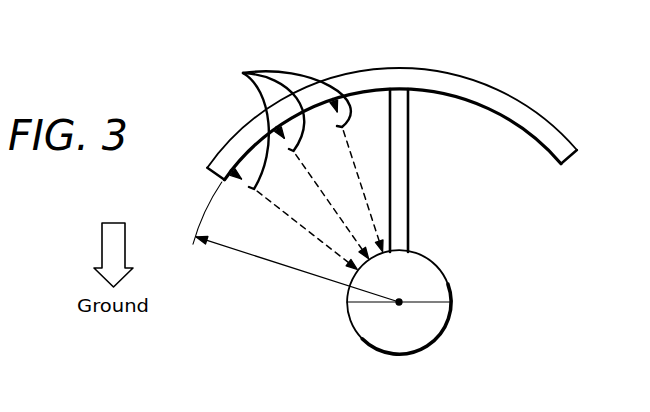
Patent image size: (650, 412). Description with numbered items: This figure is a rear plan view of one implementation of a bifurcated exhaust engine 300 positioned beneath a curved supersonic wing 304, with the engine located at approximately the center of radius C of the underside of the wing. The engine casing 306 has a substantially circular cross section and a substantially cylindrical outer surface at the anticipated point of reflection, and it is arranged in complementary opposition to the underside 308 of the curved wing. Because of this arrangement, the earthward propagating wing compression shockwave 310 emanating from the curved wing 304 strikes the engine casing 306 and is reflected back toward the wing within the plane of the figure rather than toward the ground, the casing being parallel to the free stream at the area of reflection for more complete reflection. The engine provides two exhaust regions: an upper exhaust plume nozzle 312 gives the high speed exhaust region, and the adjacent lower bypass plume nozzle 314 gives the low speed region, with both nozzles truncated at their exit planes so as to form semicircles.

The bifurcated exhaust engine 300 is at (357, 338).
The curved supersonic wing 304 is at (525, 102).
The engine casing 306 is at (427, 258).
The underside of the curved wing 308 is at (447, 95).
The earthward propagating wing compression shockwave 310 is at (243, 73).
The upper exhaust plume nozzle 312 is at (430, 292).
The lower bypass plume nozzle 314 is at (430, 323).